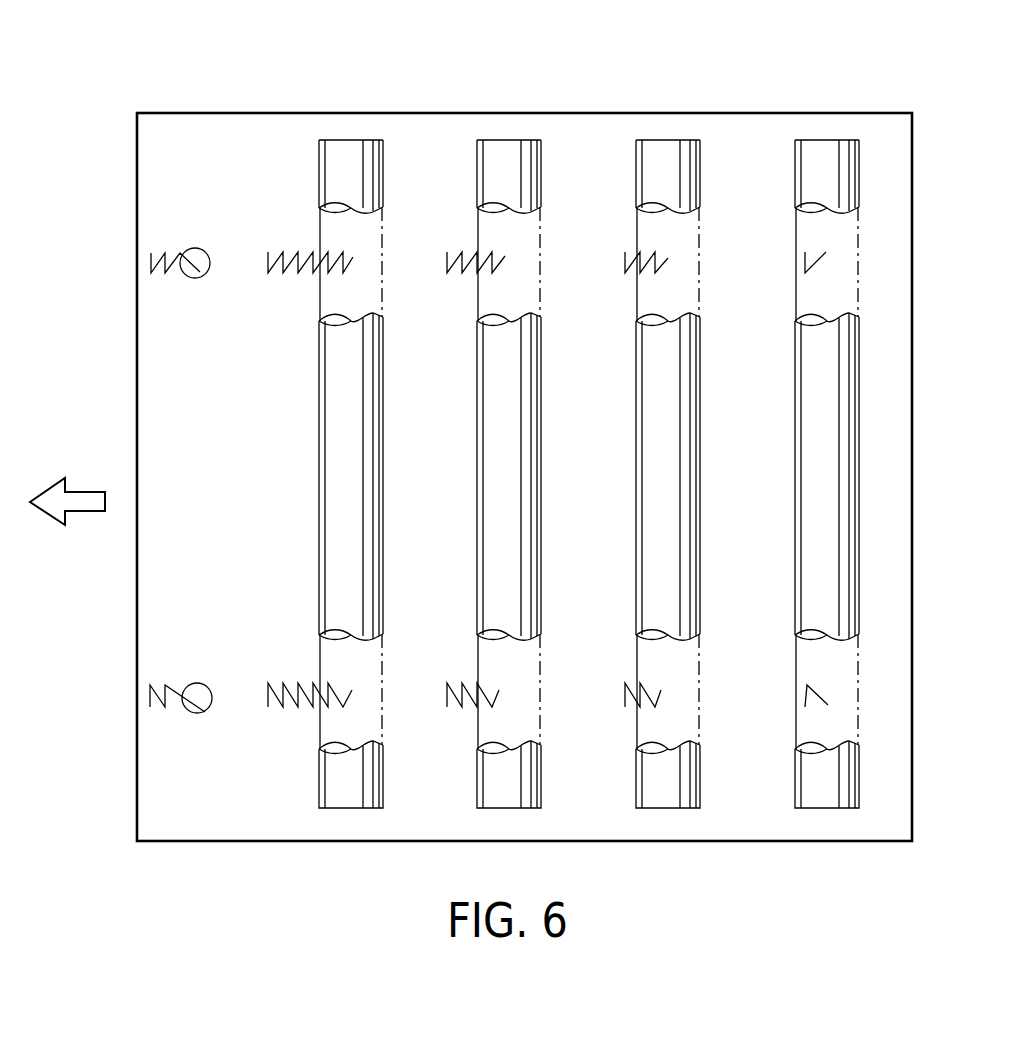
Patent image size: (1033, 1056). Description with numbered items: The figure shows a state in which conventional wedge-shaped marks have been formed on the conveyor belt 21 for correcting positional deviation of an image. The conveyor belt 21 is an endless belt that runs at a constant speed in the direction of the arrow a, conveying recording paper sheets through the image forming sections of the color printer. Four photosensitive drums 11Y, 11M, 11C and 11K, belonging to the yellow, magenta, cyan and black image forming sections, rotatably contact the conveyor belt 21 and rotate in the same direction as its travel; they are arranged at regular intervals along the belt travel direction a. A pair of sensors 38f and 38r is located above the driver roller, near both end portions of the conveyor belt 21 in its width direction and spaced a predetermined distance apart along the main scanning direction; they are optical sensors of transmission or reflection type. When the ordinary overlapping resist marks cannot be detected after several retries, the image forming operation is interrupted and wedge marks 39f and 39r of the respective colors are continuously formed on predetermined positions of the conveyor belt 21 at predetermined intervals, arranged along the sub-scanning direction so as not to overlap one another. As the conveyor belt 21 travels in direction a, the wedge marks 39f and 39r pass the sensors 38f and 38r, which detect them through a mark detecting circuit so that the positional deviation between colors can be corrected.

The conveyor belt 21 is at (249, 123).
The photosensitive drum 11K is at (366, 150).
The photosensitive drum 11C is at (526, 150).
The photosensitive drum 11M is at (685, 150).
The photosensitive drum 11Y is at (843, 150).
The sensor 38r is at (212, 252).
The sensor 38f is at (208, 712).
The wedge mark 39r is at (283, 290).
The wedge mark 39f is at (283, 663).
The arrow a is at (88, 493).